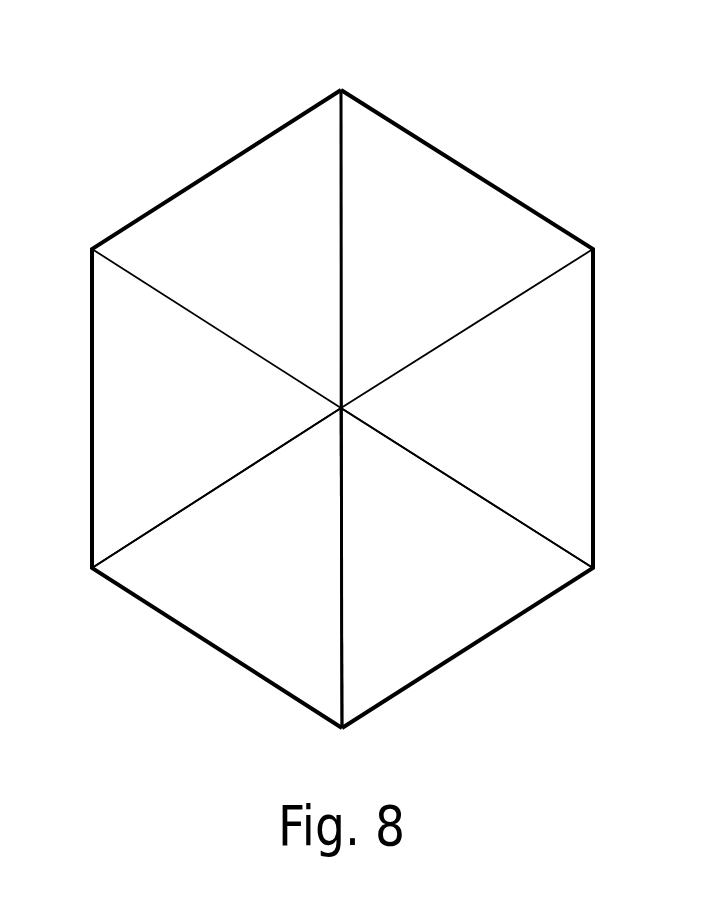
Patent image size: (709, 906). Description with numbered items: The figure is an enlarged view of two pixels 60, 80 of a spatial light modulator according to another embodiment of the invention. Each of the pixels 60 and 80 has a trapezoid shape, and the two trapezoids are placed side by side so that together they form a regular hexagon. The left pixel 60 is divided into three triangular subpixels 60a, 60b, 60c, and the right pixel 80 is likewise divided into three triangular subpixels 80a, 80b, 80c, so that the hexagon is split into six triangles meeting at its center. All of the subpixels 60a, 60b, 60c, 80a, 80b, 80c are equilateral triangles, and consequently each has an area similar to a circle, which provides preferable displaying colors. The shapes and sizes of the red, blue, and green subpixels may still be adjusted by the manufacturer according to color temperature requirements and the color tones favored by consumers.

The pixel 60 is at (203, 143).
The pixel 80 is at (480, 143).
The triangular subpixel 60a is at (298, 265).
The triangular subpixel 60b is at (197, 435).
The triangular subpixel 60c is at (308, 584).
The triangular subpixel 80a is at (460, 265).
The triangular subpixel 80b is at (537, 440).
The triangular subpixel 80c is at (457, 580).